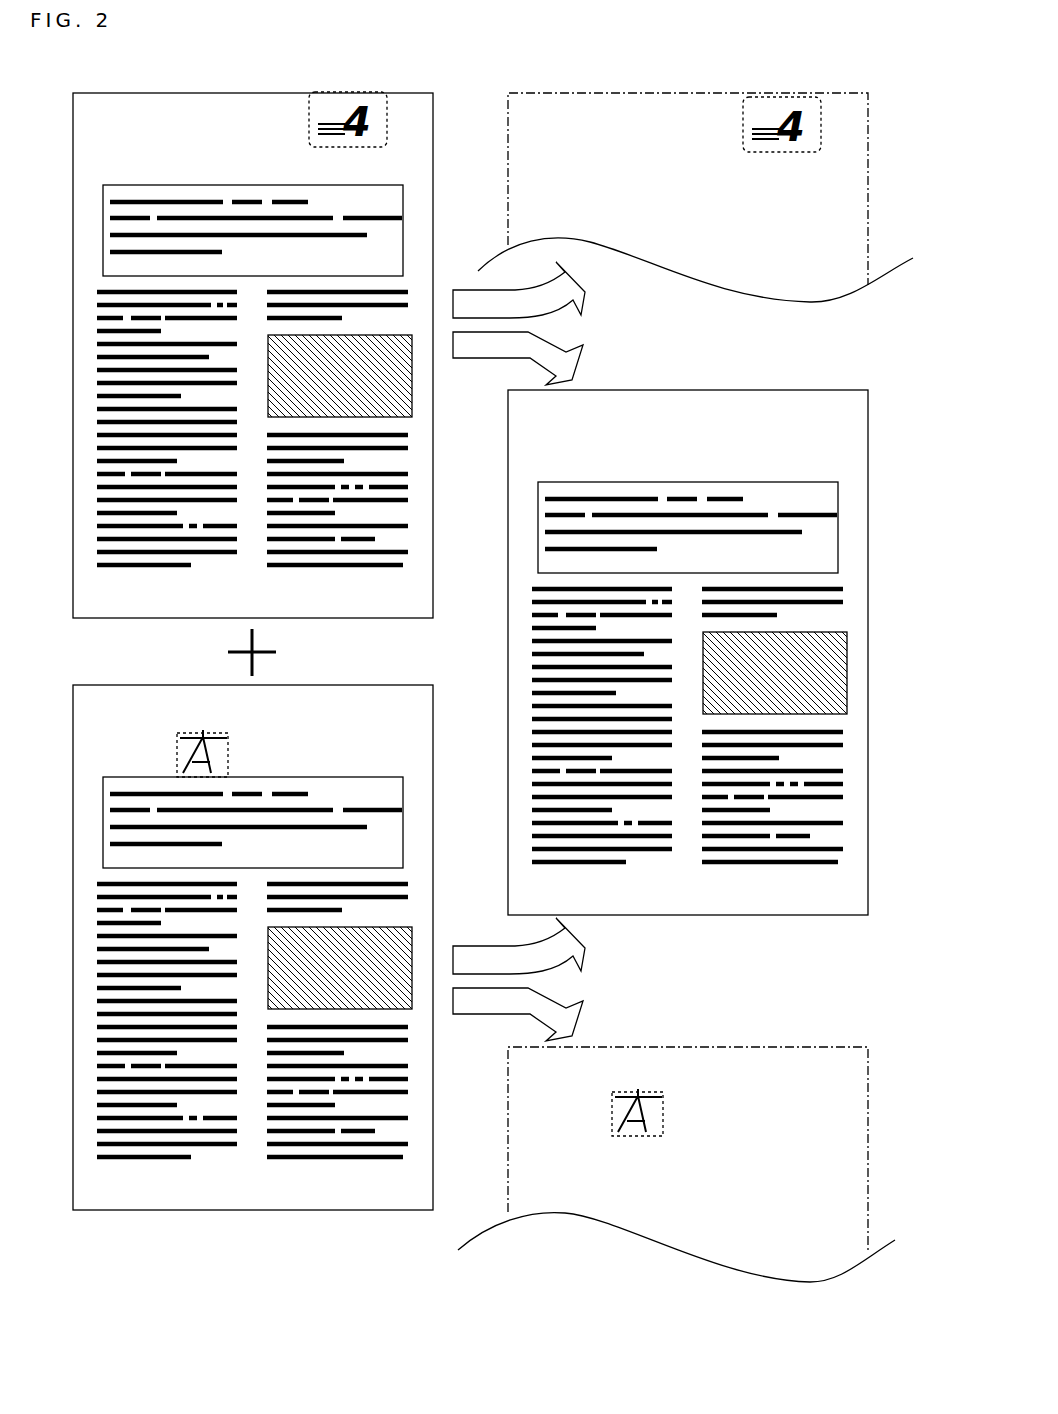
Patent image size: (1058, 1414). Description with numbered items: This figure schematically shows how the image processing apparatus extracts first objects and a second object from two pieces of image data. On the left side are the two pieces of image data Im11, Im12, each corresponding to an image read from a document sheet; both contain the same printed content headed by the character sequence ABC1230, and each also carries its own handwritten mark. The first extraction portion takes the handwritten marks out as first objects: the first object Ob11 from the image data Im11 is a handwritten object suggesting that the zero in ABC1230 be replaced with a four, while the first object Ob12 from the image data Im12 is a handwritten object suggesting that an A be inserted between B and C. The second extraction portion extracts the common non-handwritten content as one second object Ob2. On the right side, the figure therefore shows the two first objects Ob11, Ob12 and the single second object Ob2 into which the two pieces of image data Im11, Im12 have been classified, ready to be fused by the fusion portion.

The second object Ob2 is at (233, 113).
The image data Im11 is at (252, 93).
The image data Im12 is at (229, 1228).
The first object Ob11 is at (393, 104).
The first object Ob12 is at (228, 763).